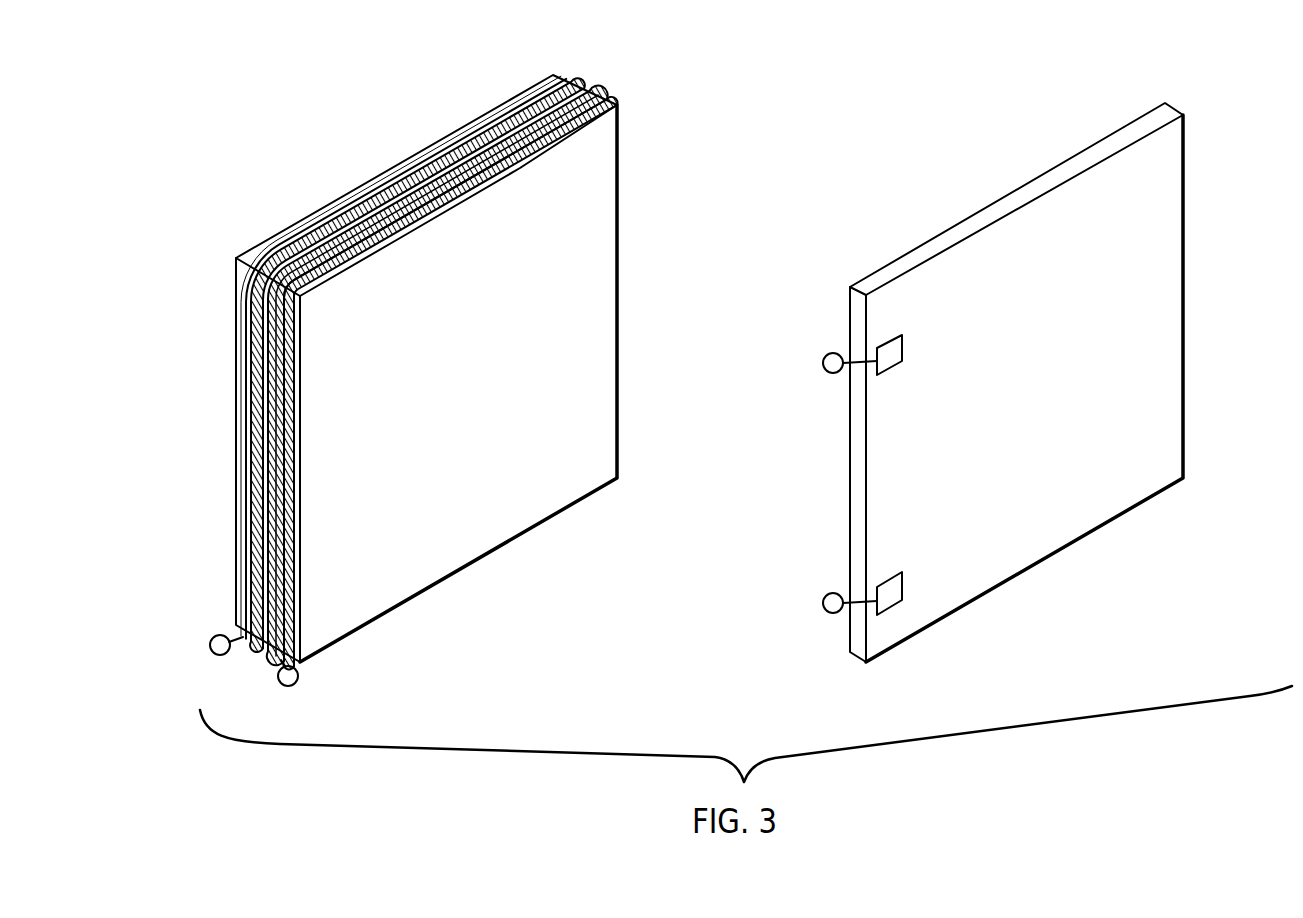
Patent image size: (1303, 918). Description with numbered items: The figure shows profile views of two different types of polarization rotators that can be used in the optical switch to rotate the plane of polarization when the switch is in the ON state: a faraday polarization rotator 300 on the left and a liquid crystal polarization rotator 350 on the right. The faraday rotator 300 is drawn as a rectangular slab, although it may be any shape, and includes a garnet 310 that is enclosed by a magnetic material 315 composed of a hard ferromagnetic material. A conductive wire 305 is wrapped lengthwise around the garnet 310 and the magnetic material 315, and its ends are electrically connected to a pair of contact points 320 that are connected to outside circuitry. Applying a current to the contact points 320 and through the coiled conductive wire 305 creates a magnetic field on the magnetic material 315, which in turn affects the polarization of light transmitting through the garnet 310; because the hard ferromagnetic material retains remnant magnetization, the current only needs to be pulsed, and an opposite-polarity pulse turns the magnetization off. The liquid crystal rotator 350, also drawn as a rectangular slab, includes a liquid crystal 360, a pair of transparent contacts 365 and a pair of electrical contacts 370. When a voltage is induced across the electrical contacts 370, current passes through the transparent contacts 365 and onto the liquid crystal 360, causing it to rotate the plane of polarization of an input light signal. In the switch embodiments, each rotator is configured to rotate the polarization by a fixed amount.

The faraday polarization rotator 300 is at (397, 138).
The conductive wire 305 is at (256, 528).
The garnet 310 is at (578, 306).
The magnetic material 315 is at (574, 81).
The pair of contact points 320 is at (292, 686).
The liquid crystal polarization rotator 350 is at (1013, 177).
The liquid crystal 360 is at (1157, 193).
The pair of transparent contacts 365 is at (890, 592).
The pair of electrical contacts 370 is at (823, 603).